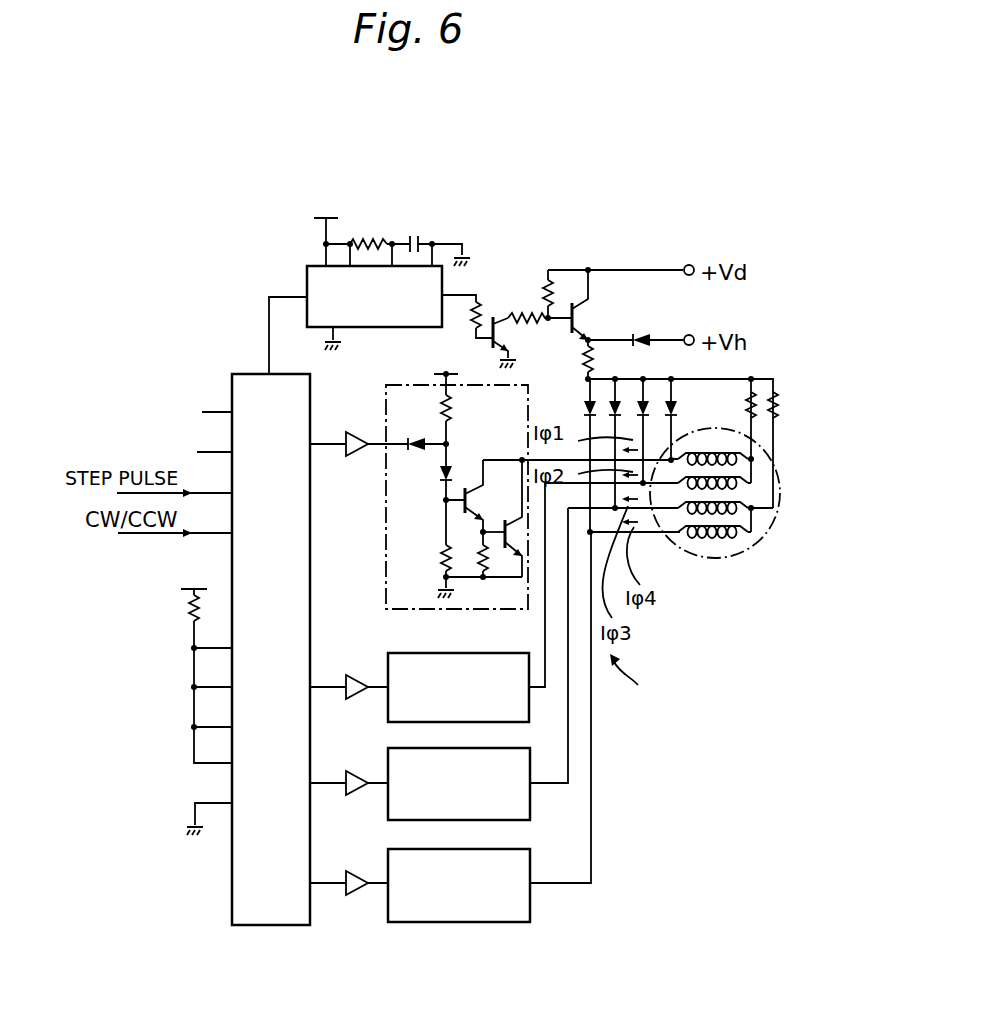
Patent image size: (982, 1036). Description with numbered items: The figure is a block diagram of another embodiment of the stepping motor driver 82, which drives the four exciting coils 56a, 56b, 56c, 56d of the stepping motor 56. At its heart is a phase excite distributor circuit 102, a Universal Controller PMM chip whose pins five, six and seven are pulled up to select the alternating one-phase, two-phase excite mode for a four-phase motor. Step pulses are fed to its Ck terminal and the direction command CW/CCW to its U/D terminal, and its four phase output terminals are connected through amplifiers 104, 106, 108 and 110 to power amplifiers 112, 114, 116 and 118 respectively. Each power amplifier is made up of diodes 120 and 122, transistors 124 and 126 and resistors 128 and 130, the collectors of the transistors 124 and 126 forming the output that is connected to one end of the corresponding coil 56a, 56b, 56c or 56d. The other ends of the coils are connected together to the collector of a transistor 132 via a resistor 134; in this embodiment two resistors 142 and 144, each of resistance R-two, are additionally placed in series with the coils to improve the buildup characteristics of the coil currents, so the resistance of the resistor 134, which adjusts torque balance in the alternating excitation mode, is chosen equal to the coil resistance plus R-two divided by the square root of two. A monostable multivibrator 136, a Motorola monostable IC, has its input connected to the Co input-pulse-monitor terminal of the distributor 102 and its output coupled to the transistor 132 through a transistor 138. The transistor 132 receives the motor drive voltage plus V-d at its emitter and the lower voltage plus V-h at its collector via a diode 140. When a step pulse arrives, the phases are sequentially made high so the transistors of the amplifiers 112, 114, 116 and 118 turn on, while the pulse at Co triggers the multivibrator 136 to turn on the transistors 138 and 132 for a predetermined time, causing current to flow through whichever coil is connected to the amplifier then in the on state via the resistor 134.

The phase excite distributor circuit 102 is at (270, 926).
The amplifier 104 is at (356, 456).
The amplifier 106 is at (356, 699).
The amplifier 108 is at (356, 795).
The amplifier 110 is at (356, 895).
The power amplifier 112 is at (386, 402).
The power amplifier 114 is at (436, 636).
The power amplifier 116 is at (531, 804).
The power amplifier 118 is at (531, 903).
The diode 120 is at (411, 435).
The diode 122 is at (441, 476).
The transistor 124 is at (484, 472).
The transistor 126 is at (519, 556).
The resistor 128 is at (442, 557).
The resistor 130 is at (478, 540).
The transistor 132 is at (584, 320).
The resistor 134 is at (584, 355).
The monostable multivibrator 136 is at (396, 328).
The transistor 138 is at (497, 316).
The diode 140 is at (641, 330).
The resistor 142 is at (742, 414).
The resistor 144 is at (778, 396).
The motor 56 is at (716, 557).
The exciting coil 56a is at (732, 450).
The exciting coil 56b is at (705, 470).
The exciting coil 56c is at (705, 516).
The exciting coil 56d is at (730, 537).
The stepping motor driver 82 is at (668, 686).